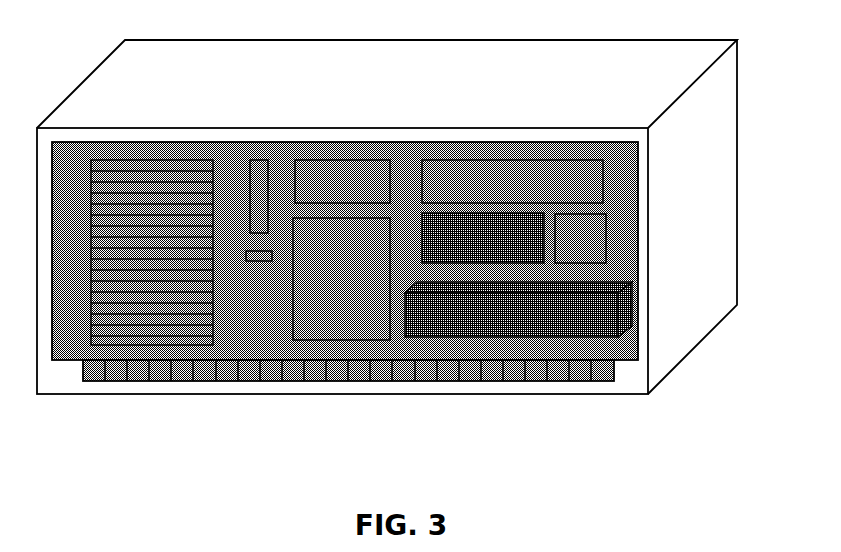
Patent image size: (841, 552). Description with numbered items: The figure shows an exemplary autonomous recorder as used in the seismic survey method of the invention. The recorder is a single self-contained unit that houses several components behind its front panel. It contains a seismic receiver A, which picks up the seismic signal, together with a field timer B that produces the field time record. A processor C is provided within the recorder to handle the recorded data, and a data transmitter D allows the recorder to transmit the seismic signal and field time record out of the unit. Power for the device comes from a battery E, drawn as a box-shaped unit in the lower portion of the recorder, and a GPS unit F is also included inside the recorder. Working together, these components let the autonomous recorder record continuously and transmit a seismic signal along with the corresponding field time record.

The seismic receiver A is at (280, 280).
The field timer B is at (424, 183).
The processor C is at (336, 215).
The data transmitter D is at (411, 244).
The battery E is at (511, 349).
The GPS unit F is at (554, 246).